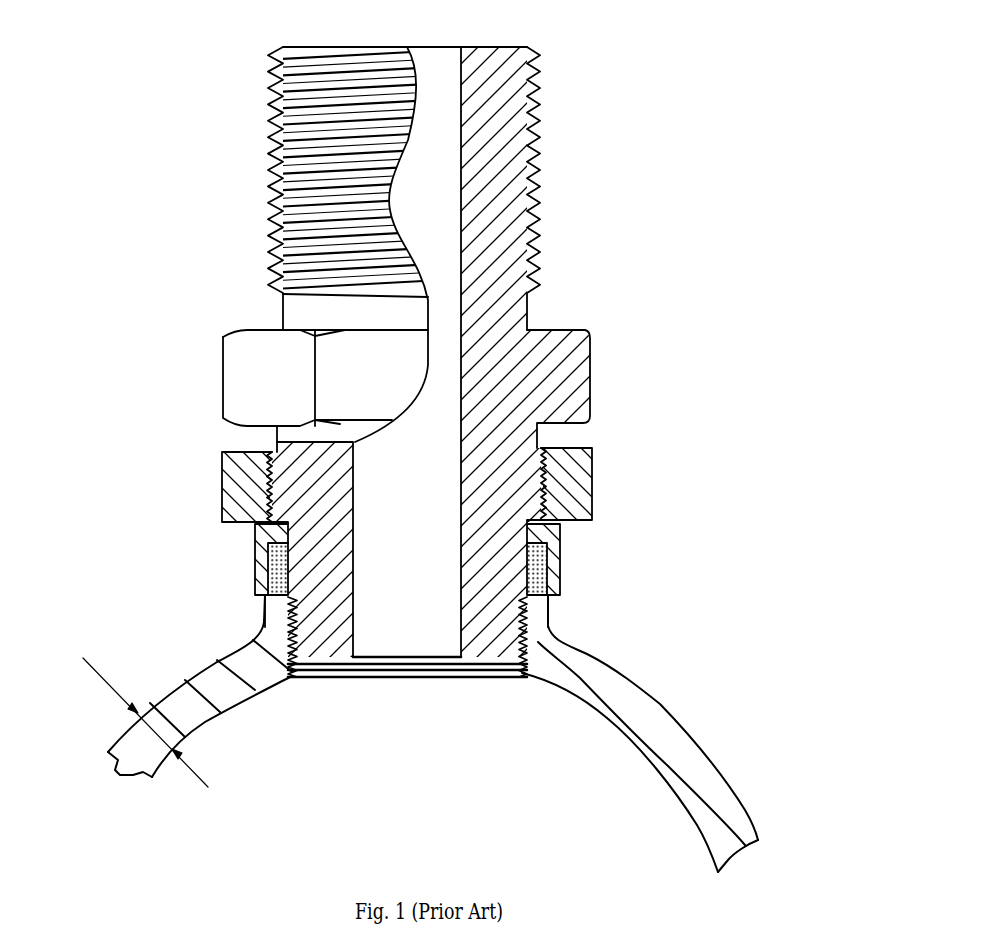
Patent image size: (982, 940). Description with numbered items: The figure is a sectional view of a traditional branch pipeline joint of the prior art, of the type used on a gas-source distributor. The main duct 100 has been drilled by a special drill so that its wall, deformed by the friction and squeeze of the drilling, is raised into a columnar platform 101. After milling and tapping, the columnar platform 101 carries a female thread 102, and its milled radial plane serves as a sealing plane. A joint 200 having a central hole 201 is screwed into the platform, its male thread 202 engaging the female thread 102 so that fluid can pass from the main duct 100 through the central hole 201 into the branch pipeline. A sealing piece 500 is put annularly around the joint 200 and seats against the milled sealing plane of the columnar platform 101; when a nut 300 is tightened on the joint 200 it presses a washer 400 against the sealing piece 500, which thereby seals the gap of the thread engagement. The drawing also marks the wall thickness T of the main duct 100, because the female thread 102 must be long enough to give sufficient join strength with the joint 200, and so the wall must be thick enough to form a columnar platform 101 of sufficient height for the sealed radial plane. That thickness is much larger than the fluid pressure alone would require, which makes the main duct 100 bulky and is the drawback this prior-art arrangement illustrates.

The main duct 100 is at (647, 717).
The columnar platform 101 is at (273, 618).
The female thread 102 is at (296, 648).
The joint 200 is at (283, 385).
The central hole 201 is at (445, 205).
The male thread 202 is at (527, 643).
The nut 300 is at (580, 470).
The washer 400 is at (252, 565).
The sealing piece 500 is at (543, 575).